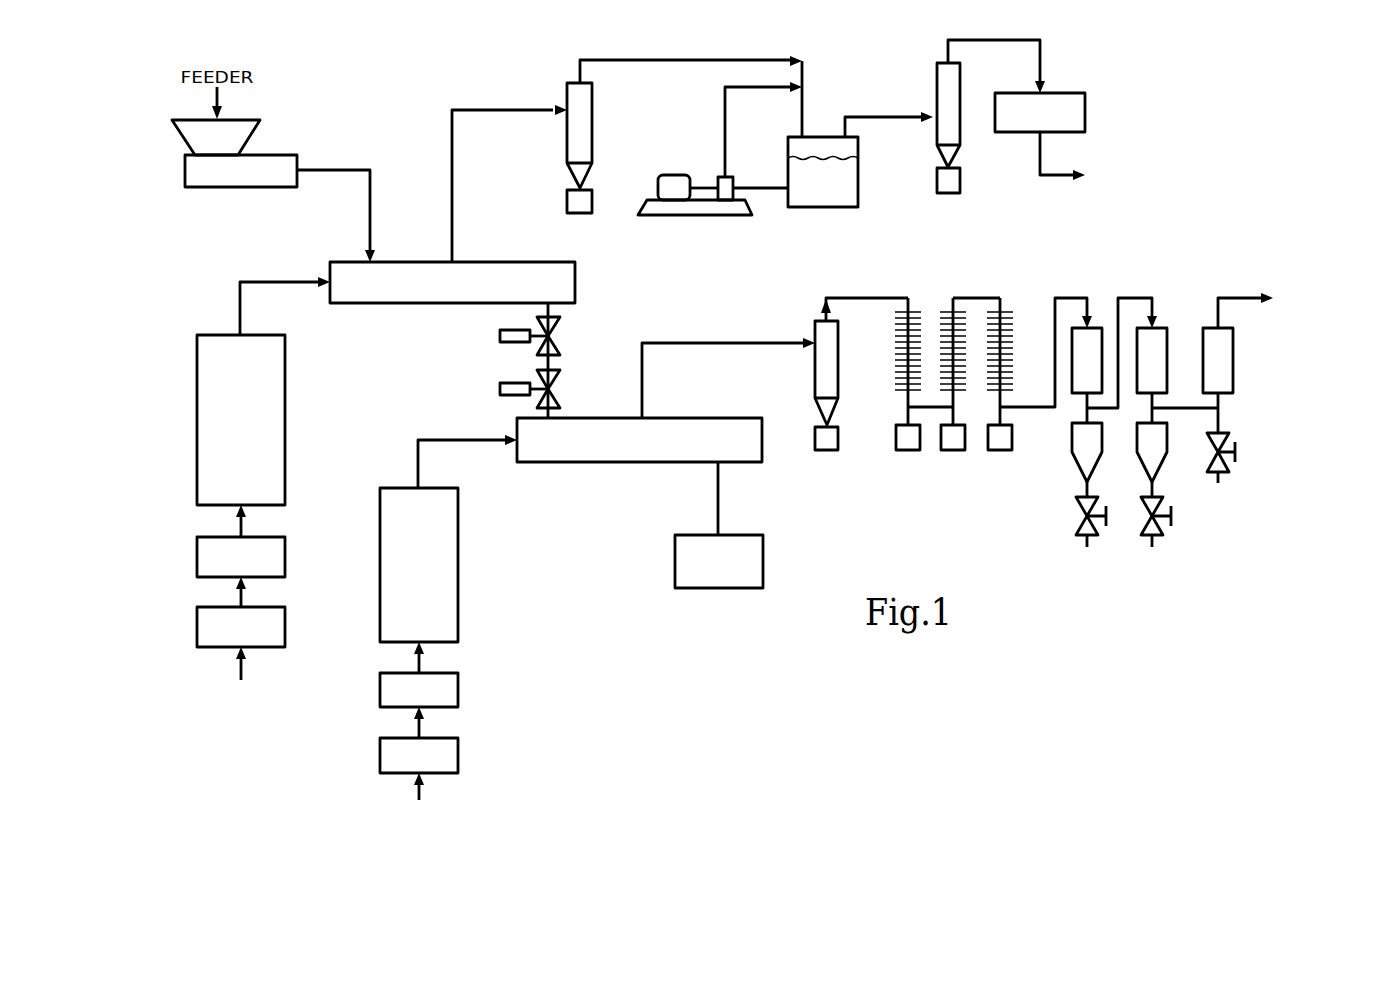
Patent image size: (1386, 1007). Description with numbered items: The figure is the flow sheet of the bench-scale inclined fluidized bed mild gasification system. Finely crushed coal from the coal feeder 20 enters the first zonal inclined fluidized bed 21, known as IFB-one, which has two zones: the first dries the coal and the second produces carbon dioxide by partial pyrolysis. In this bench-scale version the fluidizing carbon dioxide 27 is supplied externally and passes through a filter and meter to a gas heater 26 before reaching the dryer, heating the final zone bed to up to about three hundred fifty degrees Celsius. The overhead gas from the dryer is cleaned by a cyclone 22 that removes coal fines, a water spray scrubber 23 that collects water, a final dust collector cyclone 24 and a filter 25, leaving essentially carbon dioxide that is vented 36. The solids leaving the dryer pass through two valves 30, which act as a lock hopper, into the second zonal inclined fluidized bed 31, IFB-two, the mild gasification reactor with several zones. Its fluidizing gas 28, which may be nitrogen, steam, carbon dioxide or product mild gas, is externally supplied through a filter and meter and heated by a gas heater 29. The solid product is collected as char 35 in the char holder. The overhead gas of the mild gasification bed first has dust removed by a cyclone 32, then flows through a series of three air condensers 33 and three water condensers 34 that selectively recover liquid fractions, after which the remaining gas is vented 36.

The coal feeder 20 is at (280, 155).
The first zonal inclined fluidized bed (IFB-1) 21 is at (415, 262).
The cyclone 22 is at (592, 110).
The water spray scrubber 23 is at (858, 175).
The dust collector cyclone 24 is at (937, 85).
The filter 25 is at (1062, 93).
The heater for fluidizing carbon dioxide 26 is at (197, 392).
The fluidizing carbon dioxide 27 is at (240, 672).
The fluidizing gas 28 is at (415, 797).
The heater for fluidizing gas 29 is at (458, 522).
The valves 30 is at (560, 336).
The second zonal inclined fluidized bed (IFB-2) 31 is at (672, 418).
The cyclone 32 is at (838, 360).
The air condensers 33 is at (1008, 284).
The water condensers 34 is at (1222, 292).
The char 35 is at (763, 560).
The vent 36 is at (1055, 180).